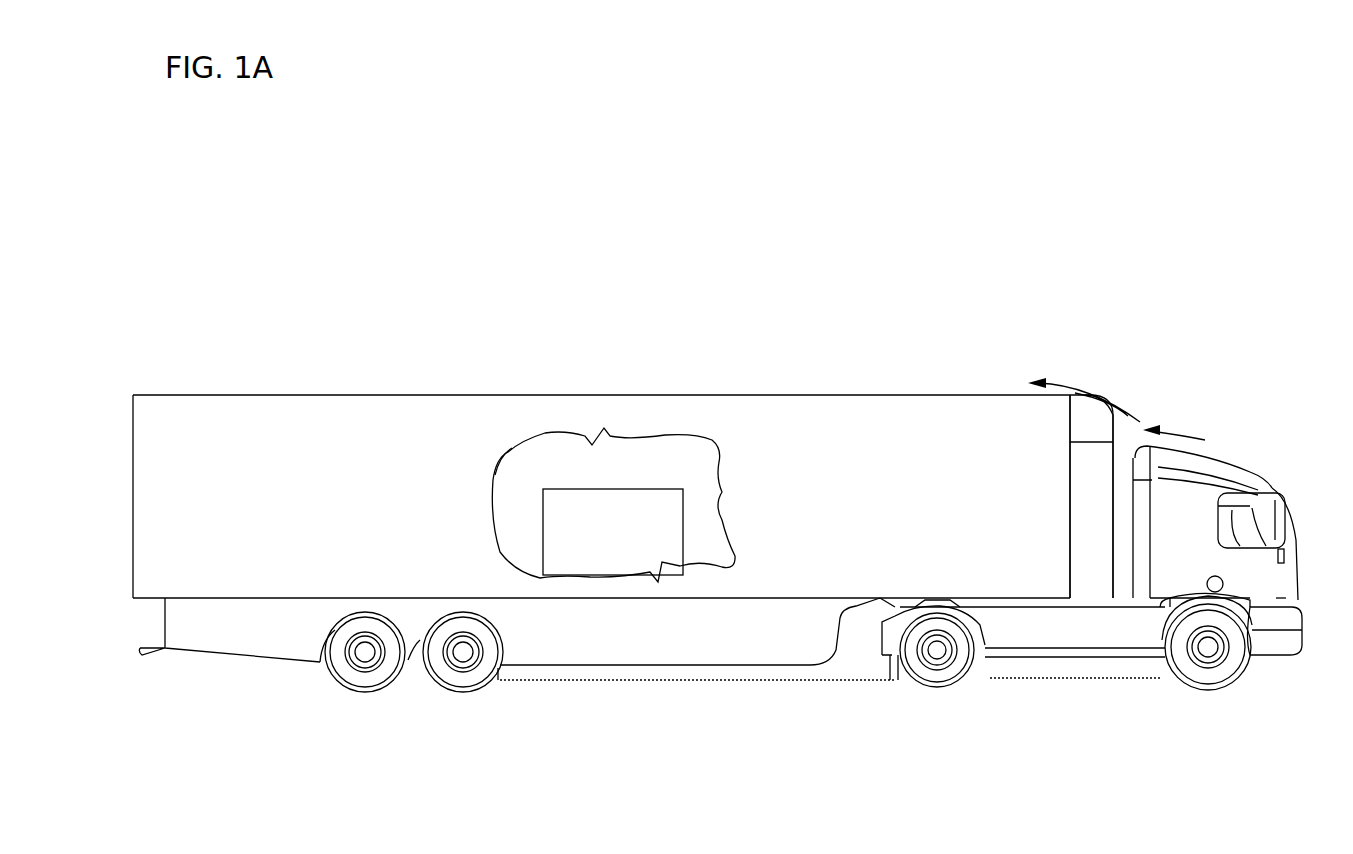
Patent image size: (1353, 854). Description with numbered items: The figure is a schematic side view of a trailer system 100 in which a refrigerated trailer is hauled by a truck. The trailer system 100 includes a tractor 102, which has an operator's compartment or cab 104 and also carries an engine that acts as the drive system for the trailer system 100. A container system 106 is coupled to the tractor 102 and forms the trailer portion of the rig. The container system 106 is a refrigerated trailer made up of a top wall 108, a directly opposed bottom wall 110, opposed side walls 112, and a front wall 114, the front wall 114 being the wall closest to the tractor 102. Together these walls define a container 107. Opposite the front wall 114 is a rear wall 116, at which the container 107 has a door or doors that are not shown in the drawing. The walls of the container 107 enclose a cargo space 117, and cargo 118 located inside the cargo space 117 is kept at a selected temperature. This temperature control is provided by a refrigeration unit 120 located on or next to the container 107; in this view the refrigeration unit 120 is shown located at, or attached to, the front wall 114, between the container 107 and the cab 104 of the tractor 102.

The trailer system 100 is at (372, 288).
The tractor 102 is at (1270, 655).
The cab 104 is at (1250, 506).
The container system 106 is at (588, 372).
The container 107 is at (292, 435).
The top wall 108 is at (754, 395).
The bottom wall 110 is at (566, 598).
The side walls 112 is at (686, 472).
The front wall 114 is at (1068, 508).
The rear wall 116 is at (133, 460).
The cargo space 117 is at (553, 444).
The cargo 118 is at (630, 541).
The refrigeration unit 120 is at (1090, 572).